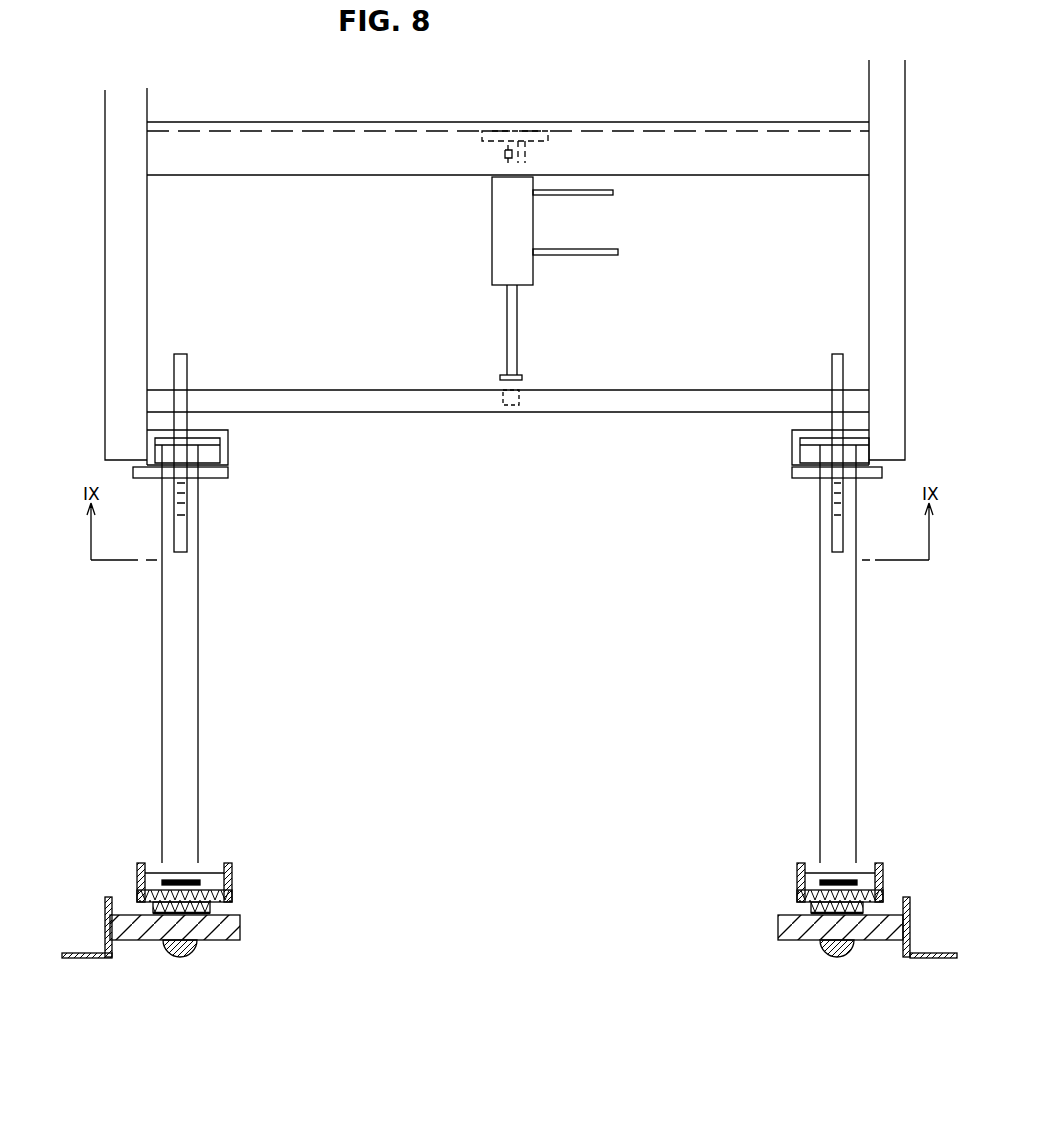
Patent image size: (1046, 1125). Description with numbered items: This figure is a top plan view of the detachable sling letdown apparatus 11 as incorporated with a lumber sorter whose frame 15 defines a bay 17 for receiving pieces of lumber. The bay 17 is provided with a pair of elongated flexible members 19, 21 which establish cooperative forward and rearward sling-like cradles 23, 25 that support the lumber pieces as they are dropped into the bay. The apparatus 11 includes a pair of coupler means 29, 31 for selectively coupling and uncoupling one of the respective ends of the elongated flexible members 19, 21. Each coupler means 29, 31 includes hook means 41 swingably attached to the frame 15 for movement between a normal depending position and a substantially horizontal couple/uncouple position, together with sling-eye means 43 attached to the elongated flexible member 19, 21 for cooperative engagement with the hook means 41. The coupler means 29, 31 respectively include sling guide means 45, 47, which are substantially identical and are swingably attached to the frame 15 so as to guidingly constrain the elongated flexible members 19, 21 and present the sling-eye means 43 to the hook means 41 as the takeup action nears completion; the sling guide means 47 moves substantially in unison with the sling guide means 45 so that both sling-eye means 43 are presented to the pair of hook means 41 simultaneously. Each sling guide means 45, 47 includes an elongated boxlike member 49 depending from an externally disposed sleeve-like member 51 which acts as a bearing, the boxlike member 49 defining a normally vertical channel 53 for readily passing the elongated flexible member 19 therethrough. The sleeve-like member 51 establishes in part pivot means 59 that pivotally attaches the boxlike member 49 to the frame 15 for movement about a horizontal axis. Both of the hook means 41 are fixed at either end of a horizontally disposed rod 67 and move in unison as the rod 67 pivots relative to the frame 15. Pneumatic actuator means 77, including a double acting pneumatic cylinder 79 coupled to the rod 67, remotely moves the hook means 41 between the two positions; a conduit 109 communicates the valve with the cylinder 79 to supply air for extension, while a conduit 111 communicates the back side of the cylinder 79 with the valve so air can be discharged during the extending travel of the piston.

The detachable sling letdown apparatus 11 is at (834, 40).
The frame 15 is at (830, 158).
The bay 17 is at (465, 1015).
The elongated flexible member 19 is at (207, 654).
The elongated flexible member 21 is at (842, 654).
The forward sling-like cradle 23 is at (190, 672).
The rearward sling-like cradle 25 is at (828, 660).
The coupler means 29 is at (255, 308).
The coupler means 31 is at (780, 310).
The hook means 41 is at (182, 532).
The sling-eye means 43 is at (230, 456).
The sling guide means 45 is at (185, 863).
The sling guide means 47 is at (797, 880).
The boxlike member 49 is at (137, 872).
The sleeve-like member 51 is at (180, 960).
The channel 53 is at (218, 882).
The pivot means 59 is at (240, 930).
The horizontally disposed rod 67 is at (605, 402).
The pneumatic actuator means 77 is at (612, 118).
The double acting pneumatic cylinder 79 is at (523, 224).
The conduit 109 is at (566, 195).
The conduit 111 is at (596, 255).